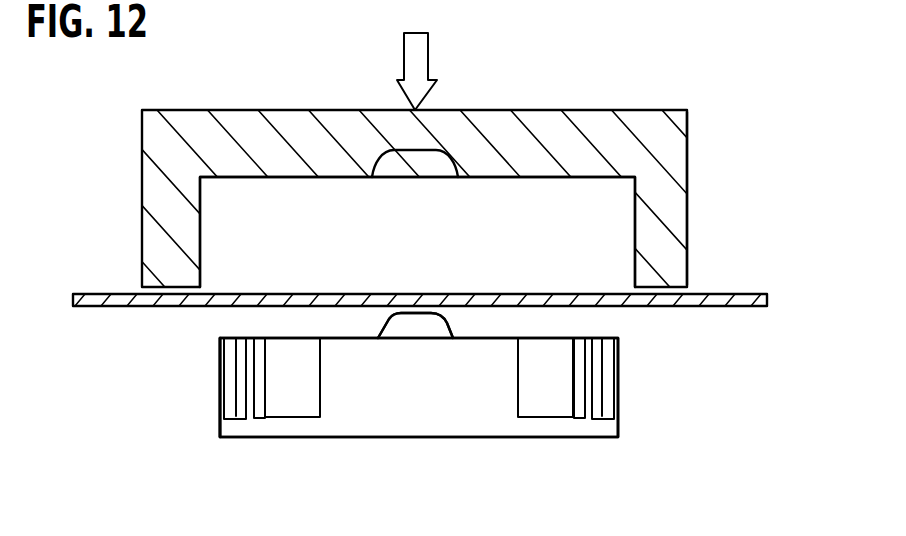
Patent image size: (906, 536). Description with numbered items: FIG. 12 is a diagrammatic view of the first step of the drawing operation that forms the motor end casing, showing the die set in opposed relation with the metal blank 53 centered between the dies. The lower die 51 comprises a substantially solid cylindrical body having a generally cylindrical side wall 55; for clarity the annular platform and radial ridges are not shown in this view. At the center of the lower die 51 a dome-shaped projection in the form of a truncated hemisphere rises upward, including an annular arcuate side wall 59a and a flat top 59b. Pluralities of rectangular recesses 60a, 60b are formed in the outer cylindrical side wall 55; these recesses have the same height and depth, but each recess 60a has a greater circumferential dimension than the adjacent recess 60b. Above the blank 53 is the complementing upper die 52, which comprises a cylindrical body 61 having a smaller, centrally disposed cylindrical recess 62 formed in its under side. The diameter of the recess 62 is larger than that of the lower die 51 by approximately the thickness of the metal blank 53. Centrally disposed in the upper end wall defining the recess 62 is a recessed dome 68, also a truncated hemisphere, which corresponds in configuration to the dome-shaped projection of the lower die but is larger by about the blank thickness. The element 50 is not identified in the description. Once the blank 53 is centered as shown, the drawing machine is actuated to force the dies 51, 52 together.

The thin plate 50 is at (100, 293).
The lower die 51 is at (642, 388).
The upper die 52 is at (578, 98).
The metal blank 53 is at (218, 372).
The cylindrical side wall 55 is at (465, 422).
The annular arcuate side wall 59a is at (385, 325).
The flat top 59b is at (416, 314).
The rectangular recess 60a is at (242, 400).
The rectangular recess 60b is at (303, 398).
The cylindrical body 61 is at (688, 130).
The cylindrical recess 62 is at (617, 212).
The recessed dome 68 is at (415, 160).